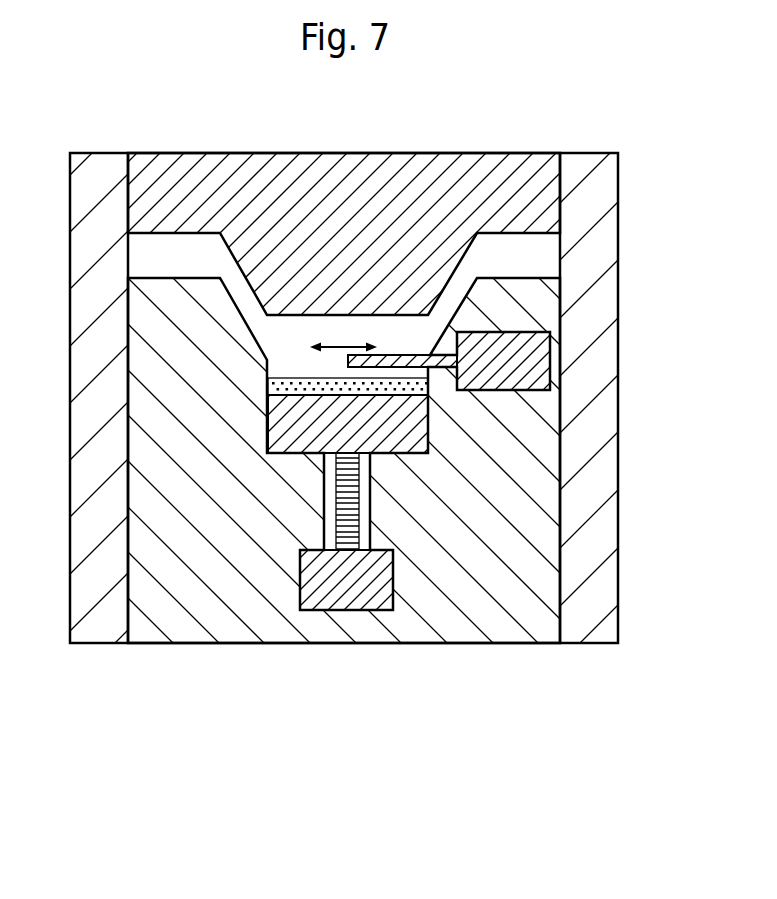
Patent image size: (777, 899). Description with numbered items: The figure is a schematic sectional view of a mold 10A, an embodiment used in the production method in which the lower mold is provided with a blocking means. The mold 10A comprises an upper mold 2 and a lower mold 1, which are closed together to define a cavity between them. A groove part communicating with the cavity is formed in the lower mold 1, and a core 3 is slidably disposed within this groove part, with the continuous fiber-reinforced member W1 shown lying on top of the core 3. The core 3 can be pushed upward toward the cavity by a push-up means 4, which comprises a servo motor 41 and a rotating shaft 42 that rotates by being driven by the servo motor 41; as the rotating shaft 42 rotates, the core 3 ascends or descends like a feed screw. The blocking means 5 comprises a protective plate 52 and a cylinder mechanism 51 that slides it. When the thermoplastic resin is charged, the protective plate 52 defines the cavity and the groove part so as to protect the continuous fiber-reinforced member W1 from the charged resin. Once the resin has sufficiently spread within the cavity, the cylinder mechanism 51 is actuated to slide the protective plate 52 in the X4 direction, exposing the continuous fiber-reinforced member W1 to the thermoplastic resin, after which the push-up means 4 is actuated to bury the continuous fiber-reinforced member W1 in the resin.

The lower mold 1 is at (552, 458).
The upper mold 2 is at (545, 195).
The core 3 is at (272, 428).
The push-up means 4 is at (504, 531).
The servo motor 41 is at (380, 583).
The rotating shaft 42 is at (353, 518).
The blocking means 5 is at (524, 340).
The cylinder mechanism 51 is at (537, 362).
The protective plate 52 is at (395, 357).
The continuous fiber-reinforced member W1 is at (272, 387).
The sliding direction of the protective plate X4 is at (343, 335).
The mold 10A is at (361, 458).